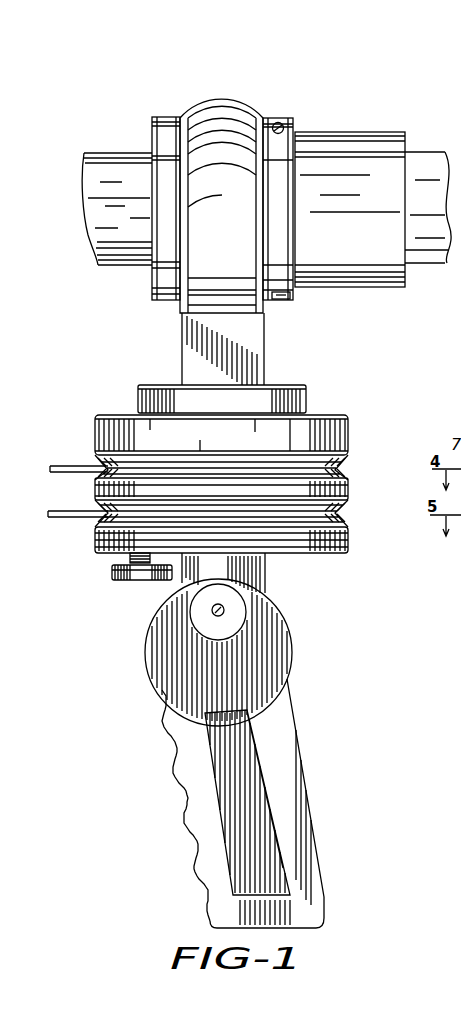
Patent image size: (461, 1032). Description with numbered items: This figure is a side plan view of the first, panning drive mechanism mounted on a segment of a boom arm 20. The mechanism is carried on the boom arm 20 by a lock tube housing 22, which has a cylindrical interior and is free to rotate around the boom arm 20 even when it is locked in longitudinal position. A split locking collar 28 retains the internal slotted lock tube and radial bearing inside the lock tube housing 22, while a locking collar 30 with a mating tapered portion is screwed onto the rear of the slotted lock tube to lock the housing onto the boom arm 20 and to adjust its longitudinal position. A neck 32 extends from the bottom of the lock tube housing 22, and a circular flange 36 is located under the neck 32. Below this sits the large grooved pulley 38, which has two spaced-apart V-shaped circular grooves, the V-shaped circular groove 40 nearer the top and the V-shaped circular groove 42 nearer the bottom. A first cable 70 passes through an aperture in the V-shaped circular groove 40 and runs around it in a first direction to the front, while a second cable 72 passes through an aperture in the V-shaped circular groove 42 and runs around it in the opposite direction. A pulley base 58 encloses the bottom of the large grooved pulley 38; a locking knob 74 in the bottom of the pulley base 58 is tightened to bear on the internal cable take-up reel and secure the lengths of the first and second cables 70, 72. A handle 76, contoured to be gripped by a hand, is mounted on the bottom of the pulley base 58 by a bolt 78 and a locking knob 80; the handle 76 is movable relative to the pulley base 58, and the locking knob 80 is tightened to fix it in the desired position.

The boom arm 20 is at (122, 262).
The lock tube housing 22 is at (240, 104).
The split locking collar 28 is at (285, 300).
The locking collar 30 is at (365, 287).
The neck 32 is at (265, 358).
The circular flange 36 is at (307, 392).
The large grooved pulley 38 is at (348, 432).
The V-shaped circular groove 40 is at (348, 486).
The V-shaped circular groove 42 is at (348, 533).
The pulley base 58 is at (287, 553).
The first cable 70 is at (74, 466).
The second cable 72 is at (74, 517).
The locking knob 74 is at (124, 582).
The handle 76 is at (217, 908).
The bolt 78 is at (215, 625).
The locking knob 80 is at (224, 618).